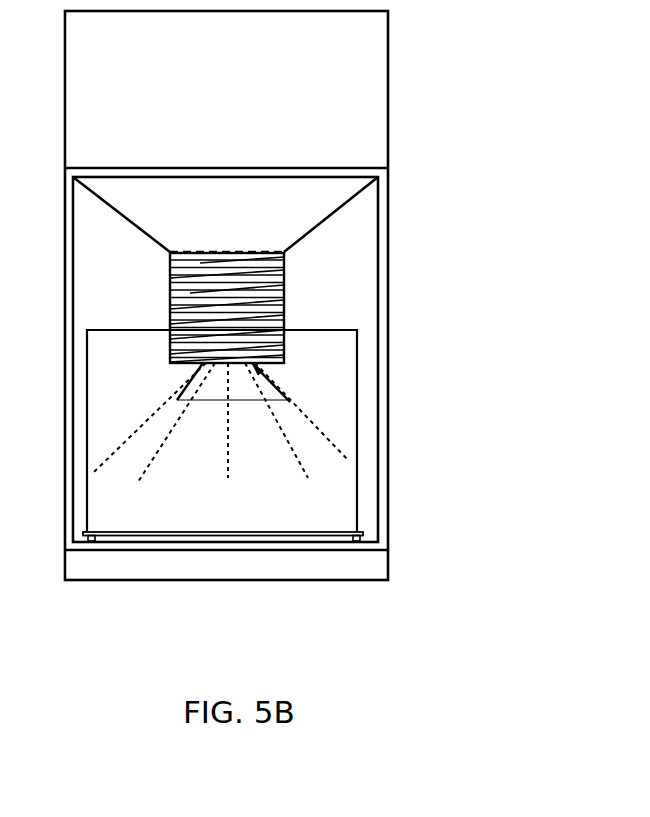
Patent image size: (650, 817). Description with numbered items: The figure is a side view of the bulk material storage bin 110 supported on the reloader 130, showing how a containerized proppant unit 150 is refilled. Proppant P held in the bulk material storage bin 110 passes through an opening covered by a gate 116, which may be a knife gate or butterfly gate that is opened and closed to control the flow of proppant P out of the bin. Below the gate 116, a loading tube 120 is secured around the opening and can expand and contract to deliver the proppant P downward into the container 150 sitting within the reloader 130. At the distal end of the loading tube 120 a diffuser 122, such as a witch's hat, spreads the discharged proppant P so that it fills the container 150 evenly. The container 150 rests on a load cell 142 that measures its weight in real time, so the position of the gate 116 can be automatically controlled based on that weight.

The bulk material storage bin 110 is at (388, 90).
The gate 116 is at (284, 252).
The loading tube 120 is at (284, 297).
The containerized proppant unit 150 is at (357, 345).
The diffuser 122 is at (290, 402).
The proppant P is at (337, 452).
The reloader 130 is at (388, 485).
The load cell 142 is at (363, 532).